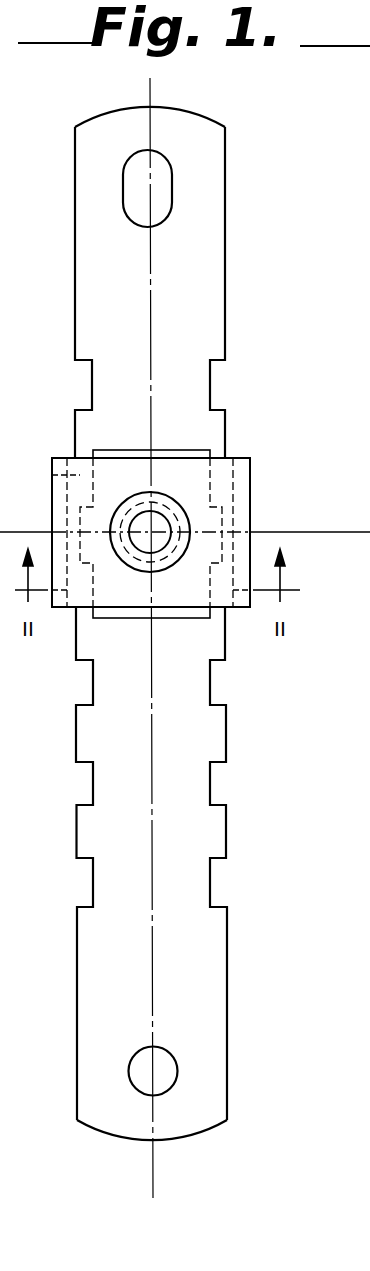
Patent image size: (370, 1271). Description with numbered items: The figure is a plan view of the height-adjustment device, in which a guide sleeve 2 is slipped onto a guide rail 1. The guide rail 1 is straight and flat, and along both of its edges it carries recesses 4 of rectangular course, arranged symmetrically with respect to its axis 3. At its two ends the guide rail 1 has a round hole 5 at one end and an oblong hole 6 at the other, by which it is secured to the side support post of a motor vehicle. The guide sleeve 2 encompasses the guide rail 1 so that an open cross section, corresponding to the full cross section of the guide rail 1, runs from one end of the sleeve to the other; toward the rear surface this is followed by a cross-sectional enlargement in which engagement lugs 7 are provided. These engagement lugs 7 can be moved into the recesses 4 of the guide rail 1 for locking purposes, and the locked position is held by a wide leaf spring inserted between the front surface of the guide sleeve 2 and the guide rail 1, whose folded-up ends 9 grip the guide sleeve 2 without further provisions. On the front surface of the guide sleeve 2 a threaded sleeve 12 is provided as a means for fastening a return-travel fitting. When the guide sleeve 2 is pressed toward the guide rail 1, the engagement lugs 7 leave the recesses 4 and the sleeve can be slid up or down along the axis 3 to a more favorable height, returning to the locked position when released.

The guide rail 1 is at (205, 254).
The guide sleeve 2 is at (252, 470).
The axis 3 is at (149, 87).
The recesses 4 is at (212, 680).
The round hole 5 is at (168, 1067).
The oblong hole 6 is at (160, 176).
The engagement lugs 7 is at (52, 475).
The folded-up ends 9 is at (178, 450).
The threaded sleeve 12 is at (186, 527).